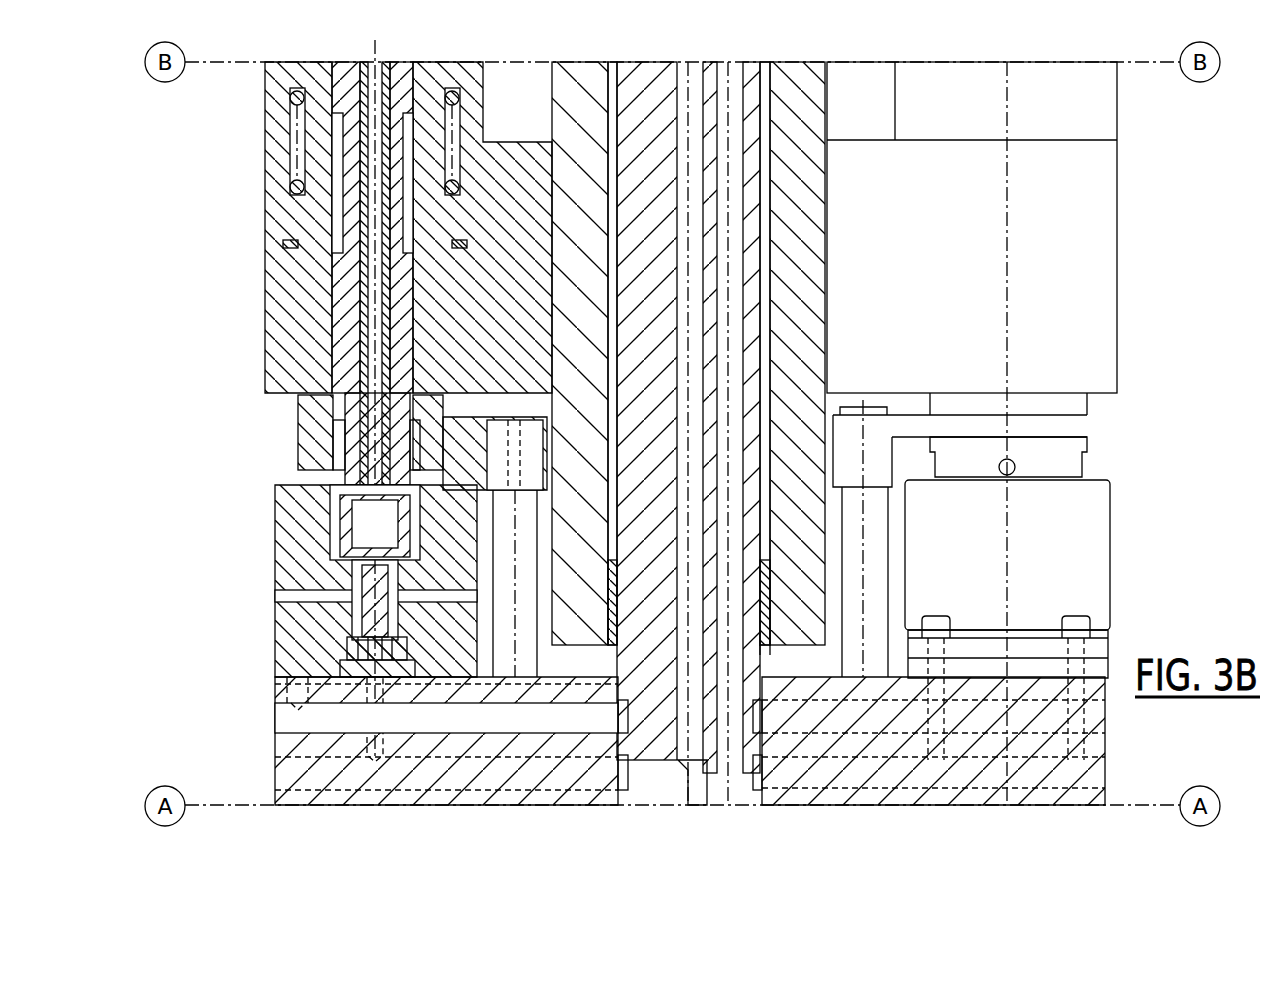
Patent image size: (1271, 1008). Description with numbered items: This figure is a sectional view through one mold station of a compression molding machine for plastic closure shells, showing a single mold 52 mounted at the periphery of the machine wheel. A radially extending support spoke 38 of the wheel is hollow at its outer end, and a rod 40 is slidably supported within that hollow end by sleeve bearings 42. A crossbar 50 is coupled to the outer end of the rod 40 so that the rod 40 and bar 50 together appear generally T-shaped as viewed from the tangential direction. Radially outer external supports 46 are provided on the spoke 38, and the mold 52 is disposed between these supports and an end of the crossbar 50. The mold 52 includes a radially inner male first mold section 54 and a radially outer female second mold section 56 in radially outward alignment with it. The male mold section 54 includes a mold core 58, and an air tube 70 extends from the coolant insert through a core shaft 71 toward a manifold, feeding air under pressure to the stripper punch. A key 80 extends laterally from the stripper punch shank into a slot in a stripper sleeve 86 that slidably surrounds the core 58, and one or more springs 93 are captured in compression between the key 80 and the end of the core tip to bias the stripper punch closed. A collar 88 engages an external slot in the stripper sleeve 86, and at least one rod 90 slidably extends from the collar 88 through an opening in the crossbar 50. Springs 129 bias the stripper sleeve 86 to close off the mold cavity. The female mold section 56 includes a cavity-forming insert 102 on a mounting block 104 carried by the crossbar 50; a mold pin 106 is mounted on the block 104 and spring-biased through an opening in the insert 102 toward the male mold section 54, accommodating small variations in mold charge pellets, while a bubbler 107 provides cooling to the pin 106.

The air tube 70 is at (375, 62).
The springs 129 is at (292, 183).
The core shaft 71 is at (323, 213).
The stripper sleeve 86 is at (308, 282).
The radially outer supports 46 is at (275, 318).
The mold core 58 is at (310, 363).
The mold 52 is at (230, 418).
The key 80 is at (302, 405).
The springs 93 is at (330, 452).
The first mold section 54 is at (242, 486).
The second mold section 56 is at (250, 541).
The cavity-forming insert 102 is at (312, 565).
The mold pin 106 is at (345, 622).
The mounting block 104 is at (285, 655).
The bubbler 107 is at (355, 660).
The crossbar 50 is at (292, 747).
The support spoke 38 is at (807, 183).
The rod 40 is at (752, 270).
The sleeve bearings 42 is at (768, 440).
The collar 88 is at (466, 430).
The rod 90 is at (528, 655).